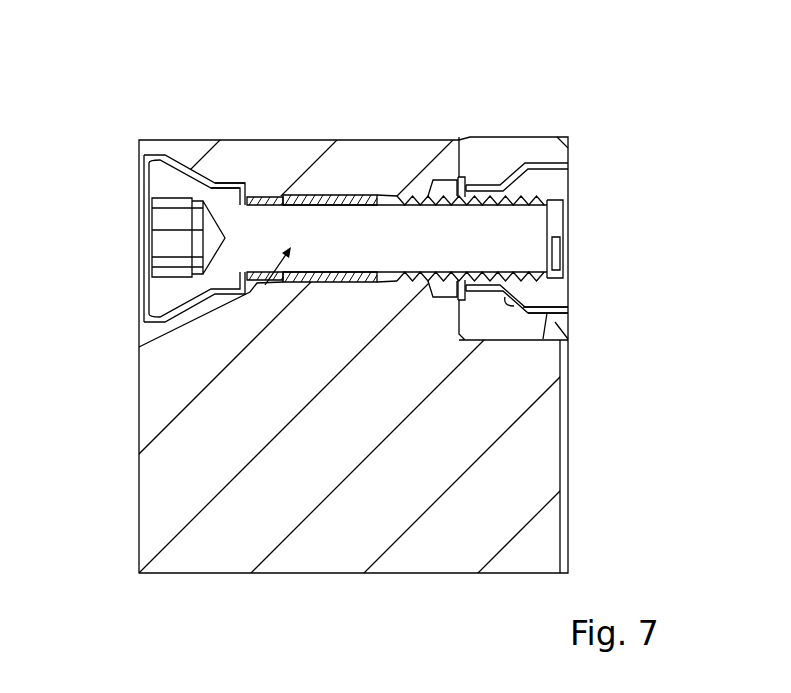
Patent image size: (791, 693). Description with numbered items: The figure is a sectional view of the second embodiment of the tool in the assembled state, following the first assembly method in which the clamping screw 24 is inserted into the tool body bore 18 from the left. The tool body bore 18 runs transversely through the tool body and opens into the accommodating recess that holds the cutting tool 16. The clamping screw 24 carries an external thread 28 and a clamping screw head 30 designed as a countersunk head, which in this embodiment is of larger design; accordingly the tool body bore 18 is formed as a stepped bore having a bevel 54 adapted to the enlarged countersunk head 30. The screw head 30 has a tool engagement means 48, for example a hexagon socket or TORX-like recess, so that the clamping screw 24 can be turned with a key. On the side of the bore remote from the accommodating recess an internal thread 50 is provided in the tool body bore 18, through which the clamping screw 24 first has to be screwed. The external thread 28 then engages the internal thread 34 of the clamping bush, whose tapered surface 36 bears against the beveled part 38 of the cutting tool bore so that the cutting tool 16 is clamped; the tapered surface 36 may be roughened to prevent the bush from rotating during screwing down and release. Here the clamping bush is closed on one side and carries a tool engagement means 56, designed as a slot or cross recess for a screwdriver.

The cutting tool 16 is at (548, 122).
The tool body bore 18 is at (347, 195).
The clamping screw 24 is at (240, 310).
The external thread 28 is at (537, 193).
The clamping screw head 30 is at (196, 172).
The internal thread 34 is at (489, 195).
The tapered surface 36 is at (522, 306).
The beveled part 38 is at (563, 308).
The tool engagement means 48 is at (160, 239).
The internal thread 50 is at (267, 196).
The bevel 54 is at (218, 181).
The tool engagement means 56 is at (558, 245).